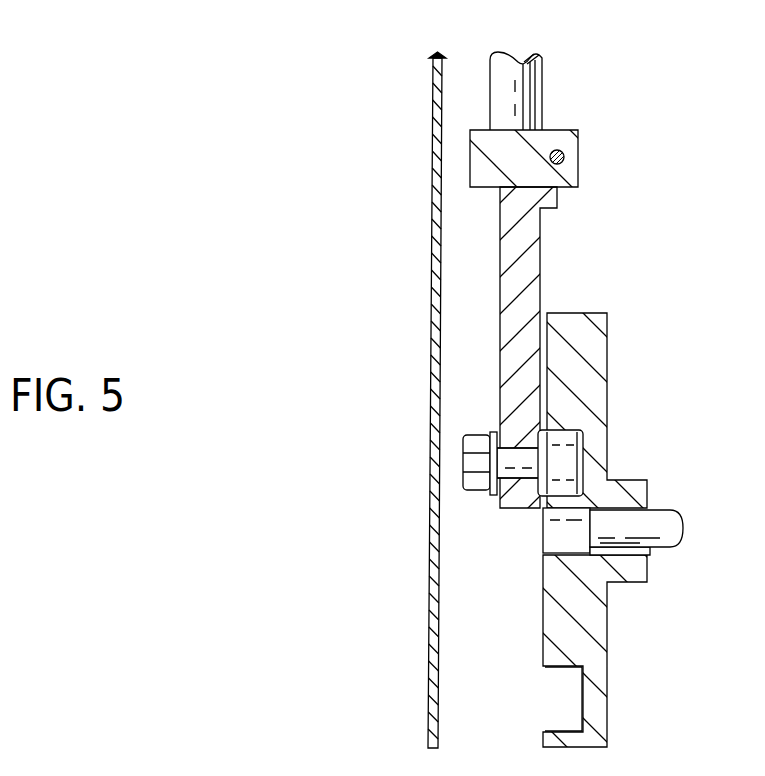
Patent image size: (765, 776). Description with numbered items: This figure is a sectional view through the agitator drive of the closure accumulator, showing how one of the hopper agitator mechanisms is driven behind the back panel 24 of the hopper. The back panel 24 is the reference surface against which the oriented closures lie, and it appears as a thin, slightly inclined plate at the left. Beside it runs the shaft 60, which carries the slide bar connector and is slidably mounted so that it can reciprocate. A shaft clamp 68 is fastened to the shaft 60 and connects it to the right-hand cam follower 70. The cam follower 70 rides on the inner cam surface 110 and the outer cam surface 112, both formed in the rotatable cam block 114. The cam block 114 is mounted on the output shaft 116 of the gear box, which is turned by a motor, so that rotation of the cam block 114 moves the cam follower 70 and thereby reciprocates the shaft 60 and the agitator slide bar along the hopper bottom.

The back panel 24 is at (433, 155).
The shaft 60 is at (541, 92).
The shaft clamp 68 is at (540, 265).
The cam follower 70 is at (585, 440).
The inner cam surface 110 is at (553, 676).
The outer cam surface 112 is at (565, 731).
The cam block 114 is at (593, 312).
The output shaft 116 is at (680, 512).